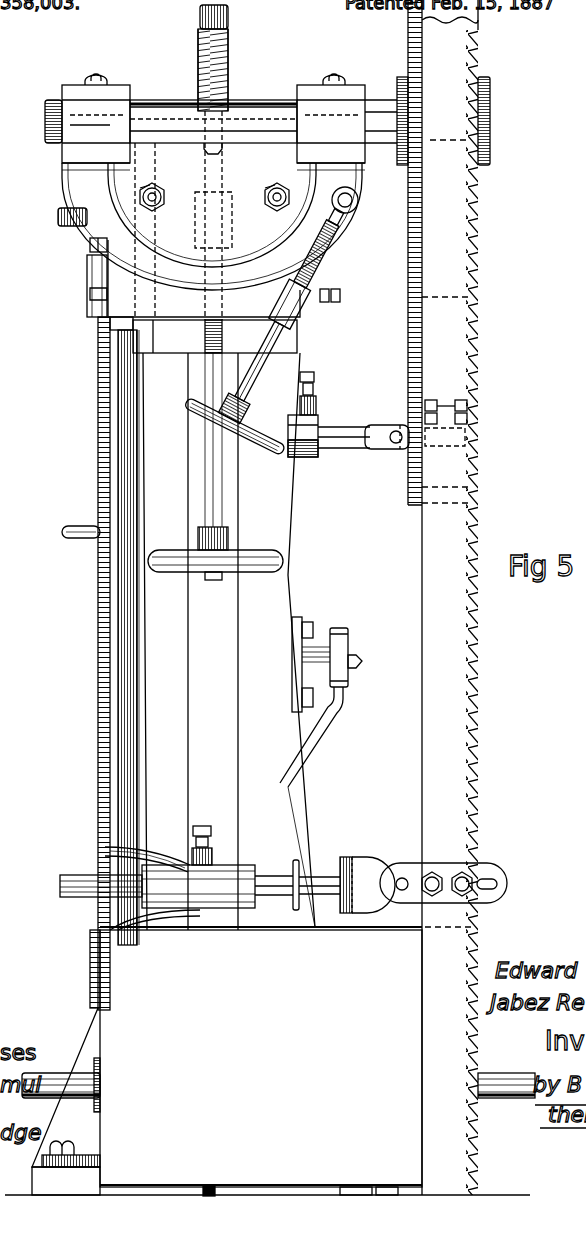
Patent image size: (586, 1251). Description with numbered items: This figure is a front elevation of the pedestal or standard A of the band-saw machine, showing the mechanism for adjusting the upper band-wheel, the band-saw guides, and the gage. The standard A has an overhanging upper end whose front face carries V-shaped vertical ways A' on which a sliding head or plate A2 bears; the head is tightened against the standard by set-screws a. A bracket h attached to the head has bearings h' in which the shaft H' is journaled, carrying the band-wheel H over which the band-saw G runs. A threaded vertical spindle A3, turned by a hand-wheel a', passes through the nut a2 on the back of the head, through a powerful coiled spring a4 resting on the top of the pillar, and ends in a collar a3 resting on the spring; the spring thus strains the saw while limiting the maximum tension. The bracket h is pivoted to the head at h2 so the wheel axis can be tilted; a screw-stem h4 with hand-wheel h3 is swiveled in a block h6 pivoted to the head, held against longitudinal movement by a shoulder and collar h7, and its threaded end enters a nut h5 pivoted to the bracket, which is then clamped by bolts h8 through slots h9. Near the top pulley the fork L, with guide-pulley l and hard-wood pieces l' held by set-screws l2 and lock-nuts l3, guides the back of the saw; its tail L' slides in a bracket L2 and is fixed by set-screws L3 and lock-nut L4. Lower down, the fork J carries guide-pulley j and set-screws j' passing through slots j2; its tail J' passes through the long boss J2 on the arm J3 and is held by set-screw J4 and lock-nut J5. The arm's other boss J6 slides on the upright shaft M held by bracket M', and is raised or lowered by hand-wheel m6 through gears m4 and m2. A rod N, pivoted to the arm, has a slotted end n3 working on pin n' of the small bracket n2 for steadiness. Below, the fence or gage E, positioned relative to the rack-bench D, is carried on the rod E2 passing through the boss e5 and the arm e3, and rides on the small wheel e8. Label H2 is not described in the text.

The band-saw G is at (443, 597).
The band-wheel H is at (437, 121).
The shaft H' is at (207, 118).
The shaft line H2 is at (422, 297).
The pillar or standard A is at (173, 717).
The vertical ways or guiding-ribs A' is at (214, 344).
The sliding head or plate A2 is at (165, 110).
The threaded vertical spindle or screw A3 is at (227, 56).
The set-screws a is at (207, 267).
The hand-wheel a' is at (215, 553).
The threaded opening or nut a2 is at (232, 228).
The collar or head a3 is at (206, 17).
The coiled spring a4 is at (227, 70).
The bracket h is at (221, 220).
The bearings h' is at (214, 117).
The pivot h2 is at (224, 148).
The hand-wheel h3 is at (266, 438).
The screw-stem or spindle h4 is at (335, 223).
The nut h5 is at (358, 200).
The block or bracket h6 is at (327, 304).
The collar h7 is at (296, 285).
The bolts h8 is at (214, 193).
The slots h9 is at (218, 177).
The upright shaft M is at (88, 628).
The bracket M' is at (138, 631).
The toothed wheel m2 is at (88, 244).
The toothed wheel m4 is at (60, 220).
The hand-wheel m6 is at (68, 538).
The fork or guide-bracket L is at (348, 436).
The tail L' is at (333, 459).
The bracket L2 is at (308, 405).
The set-screws L3 is at (300, 384).
The lock-nut L4 is at (304, 395).
The guide-pulley l is at (394, 420).
The pieces of hard wood l' is at (445, 446).
The set-screws l2 is at (430, 400).
The lock-nuts l3 is at (446, 414).
The rod N is at (307, 748).
The pin n' is at (364, 661).
The small bracket n2 is at (312, 658).
The end of rod N n3 is at (339, 657).
The fork or guide-bracket J is at (325, 885).
The tail J' is at (91, 886).
The long boss J2 is at (198, 886).
The arm or bracket J3 is at (151, 860).
The set-screw J4 is at (196, 828).
The lock-nut J5 is at (208, 852).
The long boss J6 is at (98, 914).
The guide-pulley j is at (443, 874).
The set-screws j' is at (447, 895).
The slots j2 is at (497, 884).
The fence or gage E is at (261, 1057).
The short shaft or rod E2 is at (48, 1082).
The projecting arm e3 is at (355, 1190).
The boss e5 is at (94, 1072).
The small wheel e8 is at (216, 1190).
The rack-bench D is at (495, 1196).